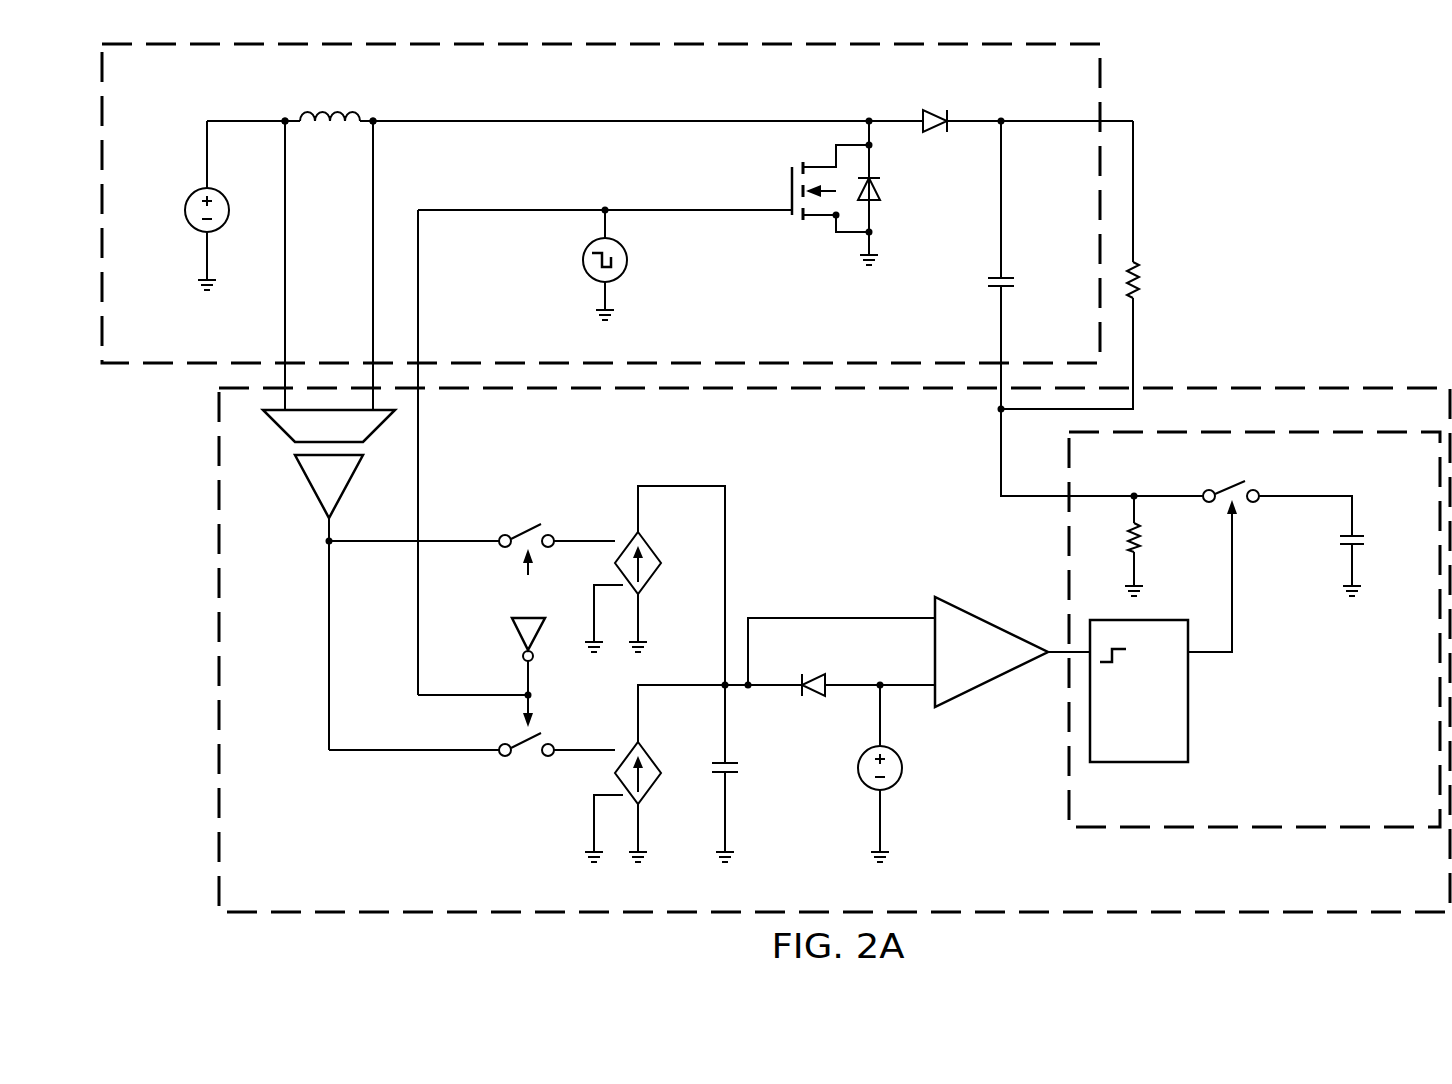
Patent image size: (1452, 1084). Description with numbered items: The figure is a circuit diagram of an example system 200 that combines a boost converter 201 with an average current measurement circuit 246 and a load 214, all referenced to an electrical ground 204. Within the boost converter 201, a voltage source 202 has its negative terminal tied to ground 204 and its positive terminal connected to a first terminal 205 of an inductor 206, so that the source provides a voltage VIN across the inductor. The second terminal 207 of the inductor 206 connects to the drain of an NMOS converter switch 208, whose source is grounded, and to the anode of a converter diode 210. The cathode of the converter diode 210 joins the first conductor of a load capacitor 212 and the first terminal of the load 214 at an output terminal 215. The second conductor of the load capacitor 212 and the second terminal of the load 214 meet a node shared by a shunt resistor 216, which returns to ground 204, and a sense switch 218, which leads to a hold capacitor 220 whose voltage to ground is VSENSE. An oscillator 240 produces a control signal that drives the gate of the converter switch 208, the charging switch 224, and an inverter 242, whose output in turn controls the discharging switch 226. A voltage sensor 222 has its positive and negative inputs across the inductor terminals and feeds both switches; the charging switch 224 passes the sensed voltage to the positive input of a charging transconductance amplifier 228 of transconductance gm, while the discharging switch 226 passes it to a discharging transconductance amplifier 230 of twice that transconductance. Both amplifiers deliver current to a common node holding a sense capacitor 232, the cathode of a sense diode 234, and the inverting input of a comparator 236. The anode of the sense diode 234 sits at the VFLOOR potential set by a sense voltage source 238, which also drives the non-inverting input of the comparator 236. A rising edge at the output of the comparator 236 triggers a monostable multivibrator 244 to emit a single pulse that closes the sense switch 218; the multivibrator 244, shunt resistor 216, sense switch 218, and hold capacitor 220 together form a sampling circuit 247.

The system 200 is at (1370, 80).
The boost converter 201 is at (1108, 98).
The voltage source 202 is at (186, 213).
The electrical ground 204 is at (199, 289).
The first terminal of the inductor 205 is at (281, 128).
The inductor 206 is at (314, 108).
The second terminal of the inductor 207 is at (378, 128).
The converter switch 208 is at (905, 183).
The converter diode 210 is at (935, 110).
The load capacitor 212 is at (1012, 282).
The load 214 is at (1138, 282).
The output terminal 215 is at (1010, 128).
The shunt resistor 216 is at (1142, 532).
The sense switch 218 is at (1226, 482).
The hold capacitor 220 is at (1366, 545).
The voltage sensor 222 is at (280, 470).
The charging switch 224 is at (522, 528).
The discharging switch 226 is at (528, 760).
The charging transconductance amplifier 228 is at (650, 586).
The discharging transconductance amplifier 230 is at (650, 796).
The sense capacitor 232 is at (740, 770).
The sense diode 234 is at (812, 698).
The comparator 236 is at (985, 692).
The sense voltage source 238 is at (905, 770).
The oscillator 240 is at (583, 262).
The inverter 242 is at (512, 640).
The monostable multivibrator 244 is at (1143, 763).
The average current measurement circuit 246 is at (210, 730).
The sampling circuit 247 is at (1340, 838).